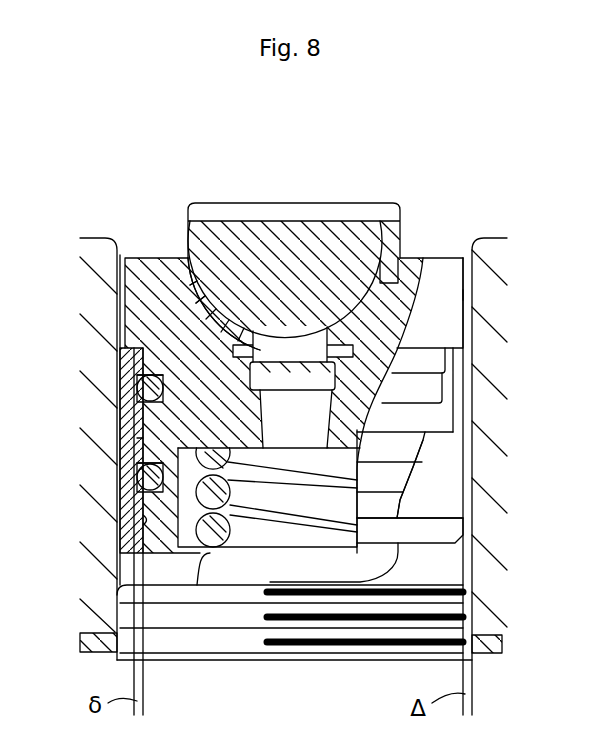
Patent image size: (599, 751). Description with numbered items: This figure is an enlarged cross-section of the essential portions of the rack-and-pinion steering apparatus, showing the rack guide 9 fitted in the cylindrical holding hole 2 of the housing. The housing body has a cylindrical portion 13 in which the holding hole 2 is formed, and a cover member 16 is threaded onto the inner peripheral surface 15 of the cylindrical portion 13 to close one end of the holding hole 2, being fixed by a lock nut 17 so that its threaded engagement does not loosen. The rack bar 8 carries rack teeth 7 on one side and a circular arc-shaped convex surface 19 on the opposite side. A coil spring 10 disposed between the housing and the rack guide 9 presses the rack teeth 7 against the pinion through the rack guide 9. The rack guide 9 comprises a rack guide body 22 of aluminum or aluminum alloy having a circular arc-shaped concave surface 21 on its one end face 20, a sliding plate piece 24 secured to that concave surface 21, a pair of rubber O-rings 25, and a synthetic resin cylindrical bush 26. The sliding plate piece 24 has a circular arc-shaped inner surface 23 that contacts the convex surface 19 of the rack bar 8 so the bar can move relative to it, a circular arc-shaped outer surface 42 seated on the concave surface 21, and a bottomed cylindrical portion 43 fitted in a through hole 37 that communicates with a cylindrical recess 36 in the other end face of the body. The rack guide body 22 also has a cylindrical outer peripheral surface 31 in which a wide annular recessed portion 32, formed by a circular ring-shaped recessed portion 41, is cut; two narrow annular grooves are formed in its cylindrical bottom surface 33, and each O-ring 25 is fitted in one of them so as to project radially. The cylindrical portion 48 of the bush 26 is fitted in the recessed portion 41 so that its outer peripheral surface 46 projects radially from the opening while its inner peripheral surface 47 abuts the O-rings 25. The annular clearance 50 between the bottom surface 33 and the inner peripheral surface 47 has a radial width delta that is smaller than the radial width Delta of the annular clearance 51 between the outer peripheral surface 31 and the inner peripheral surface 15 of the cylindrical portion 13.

The cylindrical holding hole 2 is at (453, 575).
The rack teeth 7 is at (293, 208).
The rack bar 8 is at (313, 243).
The rack guide 9 is at (457, 246).
The coil spring 10 is at (208, 538).
The cylindrical portion 13 is at (104, 247).
The inner peripheral surface 15 is at (125, 570).
The cover member 16 is at (236, 642).
The lock nut 17 is at (483, 648).
The circular arc-shaped convex surface 19 is at (418, 258).
The one end face 20 is at (152, 258).
The circular arc-shaped concave surface 21 is at (375, 295).
The rack guide body 22 is at (453, 323).
The circular arc-shaped inner surface 23 is at (213, 275).
The sliding plate piece 24 is at (177, 288).
The O-ring 25 is at (440, 395).
The cylindrical bush 26 is at (138, 390).
The cylindrical outer peripheral surface 31 is at (465, 272).
The wide annular recessed portion 32 is at (470, 424).
The cylindrical bottom surface 33 is at (140, 462).
The cylindrical recess 36 is at (187, 519).
The through hole 37 is at (473, 458).
The circular ring-shaped recessed portion 41 is at (123, 417).
The circular arc-shaped outer surface 42 is at (190, 312).
The bottomed cylindrical portion 43 is at (270, 338).
The outer peripheral surface 46 is at (472, 511).
The inner peripheral surface 47 is at (450, 367).
The cylindrical portion 48 is at (458, 482).
The annular clearance 50 is at (138, 440).
The annular clearance 51 is at (467, 295).